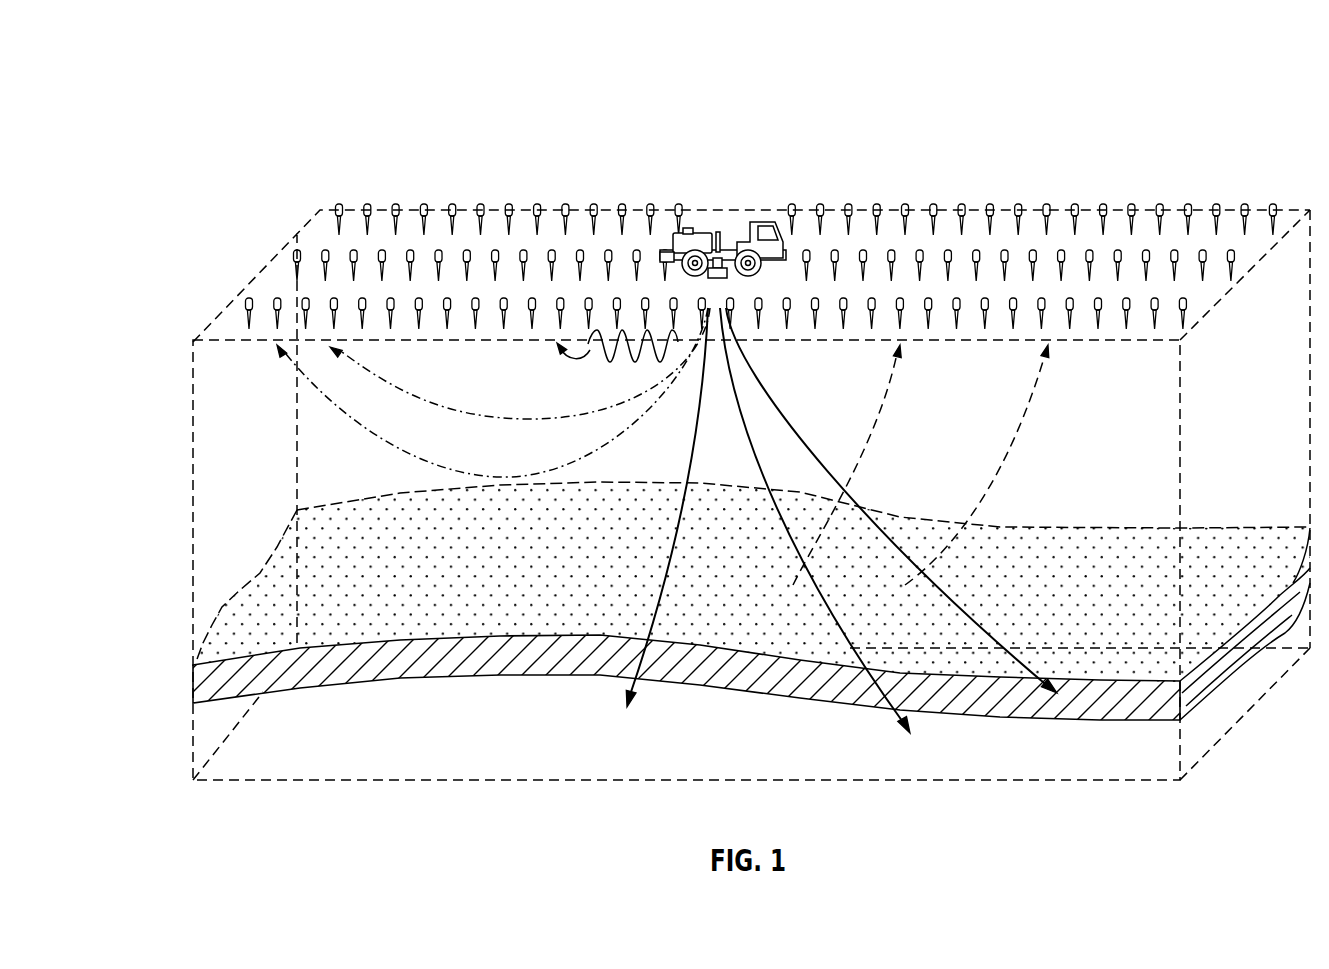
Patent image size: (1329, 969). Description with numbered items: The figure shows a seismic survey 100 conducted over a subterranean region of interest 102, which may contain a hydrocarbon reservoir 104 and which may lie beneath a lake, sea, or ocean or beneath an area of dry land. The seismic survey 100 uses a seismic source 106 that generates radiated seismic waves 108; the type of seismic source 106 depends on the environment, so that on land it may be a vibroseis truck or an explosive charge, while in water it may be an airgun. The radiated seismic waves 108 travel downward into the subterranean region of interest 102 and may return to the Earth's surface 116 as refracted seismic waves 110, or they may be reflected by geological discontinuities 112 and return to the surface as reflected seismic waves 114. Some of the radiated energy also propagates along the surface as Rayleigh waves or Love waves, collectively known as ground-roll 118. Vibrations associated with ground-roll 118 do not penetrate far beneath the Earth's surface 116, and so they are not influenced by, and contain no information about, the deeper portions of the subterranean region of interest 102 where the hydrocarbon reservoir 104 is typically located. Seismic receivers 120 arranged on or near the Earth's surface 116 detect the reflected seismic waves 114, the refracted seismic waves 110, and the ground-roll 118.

The seismic survey 100 is at (1172, 78).
The subterranean region of interest 102 is at (1120, 752).
The hydrocarbon reservoir 104 is at (207, 685).
The seismic source 106 is at (695, 228).
The radiated seismic waves 108 is at (633, 690).
The refracted seismic waves 110 is at (292, 372).
The geological discontinuities 112 is at (1182, 720).
The reflected seismic waves 114 is at (895, 375).
The Earth's surface 116 is at (238, 300).
The ground-roll 118 is at (593, 350).
The seismic receivers 120 is at (1153, 208).